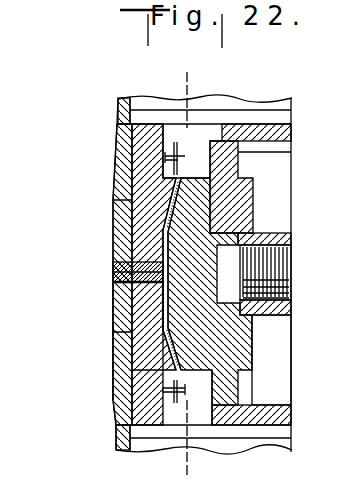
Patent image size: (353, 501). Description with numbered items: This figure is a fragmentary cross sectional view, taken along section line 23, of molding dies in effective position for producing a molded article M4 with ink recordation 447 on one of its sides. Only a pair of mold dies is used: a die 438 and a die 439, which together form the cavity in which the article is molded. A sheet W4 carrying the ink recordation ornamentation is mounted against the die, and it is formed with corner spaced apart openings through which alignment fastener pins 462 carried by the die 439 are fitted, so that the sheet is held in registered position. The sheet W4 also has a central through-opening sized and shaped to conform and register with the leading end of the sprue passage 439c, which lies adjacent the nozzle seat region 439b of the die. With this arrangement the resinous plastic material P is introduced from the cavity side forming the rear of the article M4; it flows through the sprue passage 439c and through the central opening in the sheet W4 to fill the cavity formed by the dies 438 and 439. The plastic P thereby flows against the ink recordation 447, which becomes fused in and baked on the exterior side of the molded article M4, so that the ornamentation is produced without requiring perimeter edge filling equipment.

The section line 23 is at (187, 72).
The alignment fastener pins 462 is at (180, 155).
The die 439 is at (109, 274).
The sheet W4 is at (137, 193).
The die 438 is at (215, 190).
The molded article M4 is at (170, 226).
The resinous plastic material P is at (115, 274).
The housing lower portion 439b is at (113, 282).
The sprue passage 439c is at (155, 284).
The ink recordation 447 is at (255, 330).